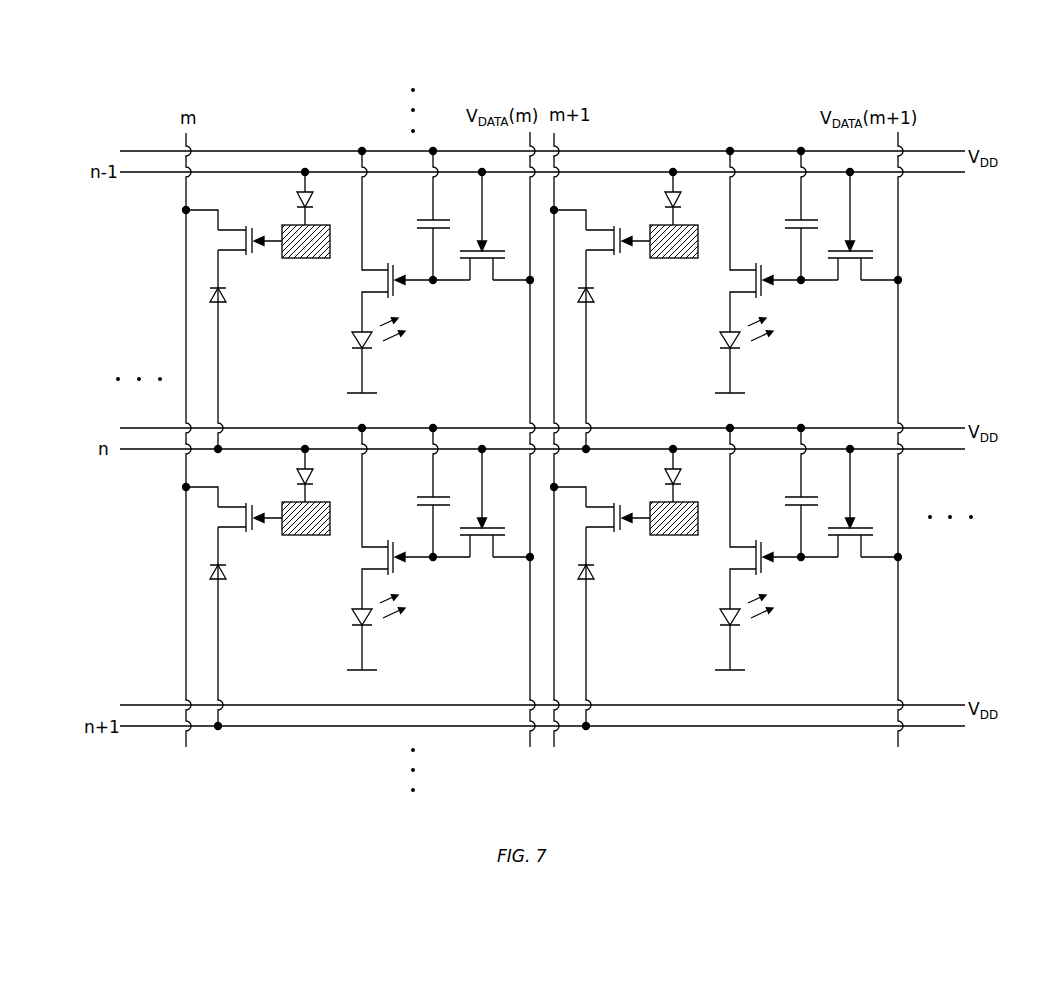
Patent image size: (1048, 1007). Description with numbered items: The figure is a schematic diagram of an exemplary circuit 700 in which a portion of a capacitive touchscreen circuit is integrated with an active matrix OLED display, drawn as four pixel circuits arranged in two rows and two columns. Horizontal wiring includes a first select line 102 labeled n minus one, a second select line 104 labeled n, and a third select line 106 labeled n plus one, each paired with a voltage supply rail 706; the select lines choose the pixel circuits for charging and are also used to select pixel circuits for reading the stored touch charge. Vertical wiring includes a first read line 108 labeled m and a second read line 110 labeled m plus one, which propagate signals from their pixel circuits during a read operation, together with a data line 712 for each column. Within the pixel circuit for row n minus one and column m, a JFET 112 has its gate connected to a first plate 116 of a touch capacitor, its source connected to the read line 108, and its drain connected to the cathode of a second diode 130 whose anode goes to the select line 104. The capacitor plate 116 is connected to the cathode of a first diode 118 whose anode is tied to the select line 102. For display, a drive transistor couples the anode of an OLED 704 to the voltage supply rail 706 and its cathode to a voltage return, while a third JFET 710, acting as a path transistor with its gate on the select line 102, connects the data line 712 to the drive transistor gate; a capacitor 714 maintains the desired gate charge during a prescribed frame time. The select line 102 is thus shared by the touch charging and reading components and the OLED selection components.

The circuit 700 is at (116, 104).
The first select line 102 is at (146, 176).
The second select line 104 is at (146, 453).
The third select line 106 is at (146, 730).
The first read line 108 is at (184, 287).
The second read line 110 is at (556, 135).
The JFET 112 is at (249, 267).
The first plate 116 is at (310, 259).
The first diode 118 is at (297, 199).
The second diode 130 is at (225, 303).
The OLED 704 is at (377, 353).
The voltage supply rail 706 is at (938, 149).
The third JFET 710 is at (482, 287).
The data line 712 is at (530, 360).
The capacitor 714 is at (412, 228).